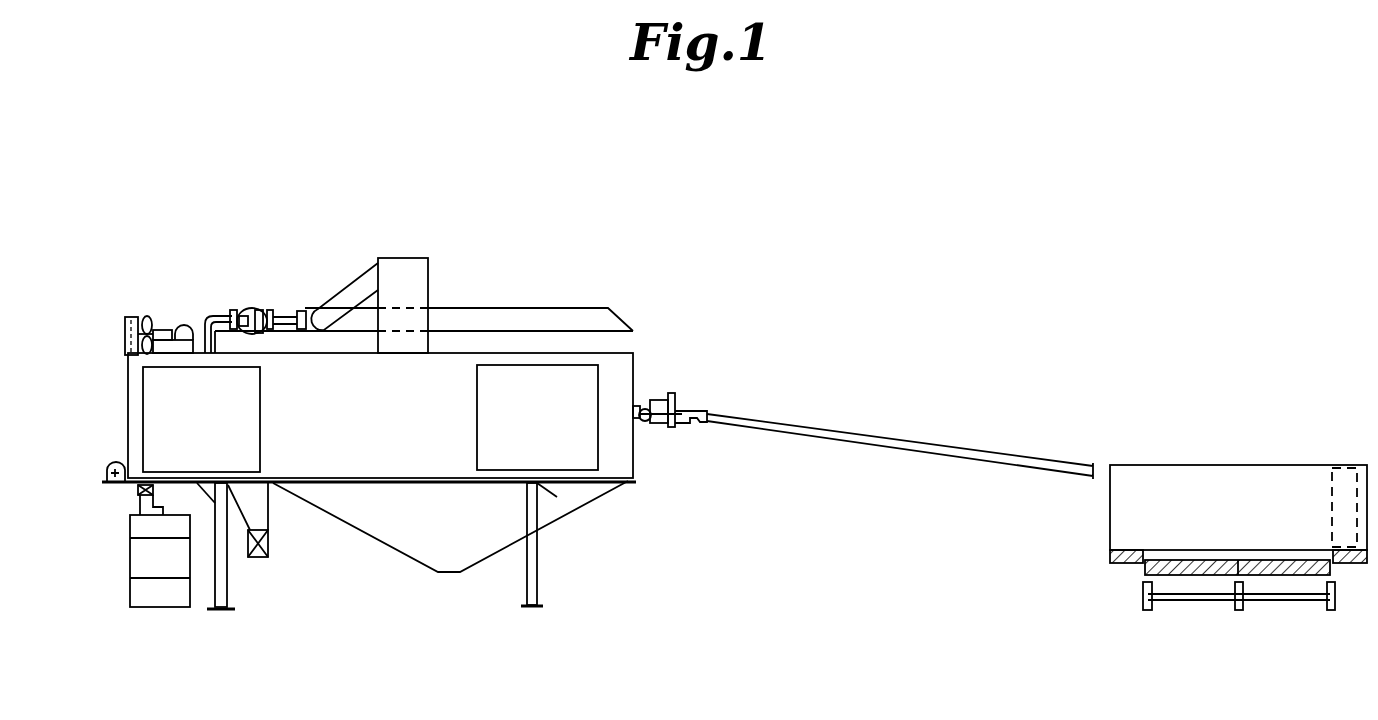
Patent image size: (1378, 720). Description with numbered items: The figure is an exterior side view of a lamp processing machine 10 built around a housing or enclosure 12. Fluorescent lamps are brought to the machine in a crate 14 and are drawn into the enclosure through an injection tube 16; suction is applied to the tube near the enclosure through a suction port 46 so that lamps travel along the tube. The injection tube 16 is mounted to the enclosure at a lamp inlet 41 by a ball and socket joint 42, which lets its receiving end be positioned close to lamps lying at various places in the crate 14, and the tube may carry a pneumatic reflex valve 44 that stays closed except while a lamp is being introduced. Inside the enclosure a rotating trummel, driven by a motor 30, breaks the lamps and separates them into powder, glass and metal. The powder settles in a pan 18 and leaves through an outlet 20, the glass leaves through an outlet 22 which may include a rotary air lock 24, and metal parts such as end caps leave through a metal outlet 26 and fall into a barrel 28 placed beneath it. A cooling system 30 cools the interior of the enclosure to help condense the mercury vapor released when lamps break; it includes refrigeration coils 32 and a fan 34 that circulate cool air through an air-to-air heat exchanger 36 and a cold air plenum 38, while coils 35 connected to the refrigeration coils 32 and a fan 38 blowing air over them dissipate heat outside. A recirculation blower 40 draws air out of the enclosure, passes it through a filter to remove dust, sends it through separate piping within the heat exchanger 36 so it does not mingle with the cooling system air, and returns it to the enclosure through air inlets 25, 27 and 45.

The lamp processing machine 10 is at (545, 255).
The housing or enclosure 12 is at (133, 383).
The crate 14 is at (1208, 482).
The injection tube 16 is at (885, 440).
The pan 18 is at (563, 500).
The outlet 20 is at (448, 573).
The outlet 22 is at (262, 558).
The rotary air lock 24 is at (245, 548).
The air inlet 25 is at (270, 522).
The metal outlet 26 is at (138, 490).
The air inlet 27 is at (160, 513).
The barrel 28 is at (168, 565).
The cooling system 30 is at (205, 283).
The refrigeration coils 32 is at (264, 308).
The fan 34 is at (240, 312).
The coils 35 is at (125, 328).
The air-to-air heat exchanger 36 is at (490, 317).
The fan 38 is at (170, 291).
The recirculation blower 40 is at (402, 270).
The lamp inlet 41 is at (650, 395).
The ball and socket joint 42 is at (640, 400).
The pneumatic reflex valve 44 is at (678, 403).
The air inlet 45 is at (640, 422).
The suction port 46 is at (698, 427).